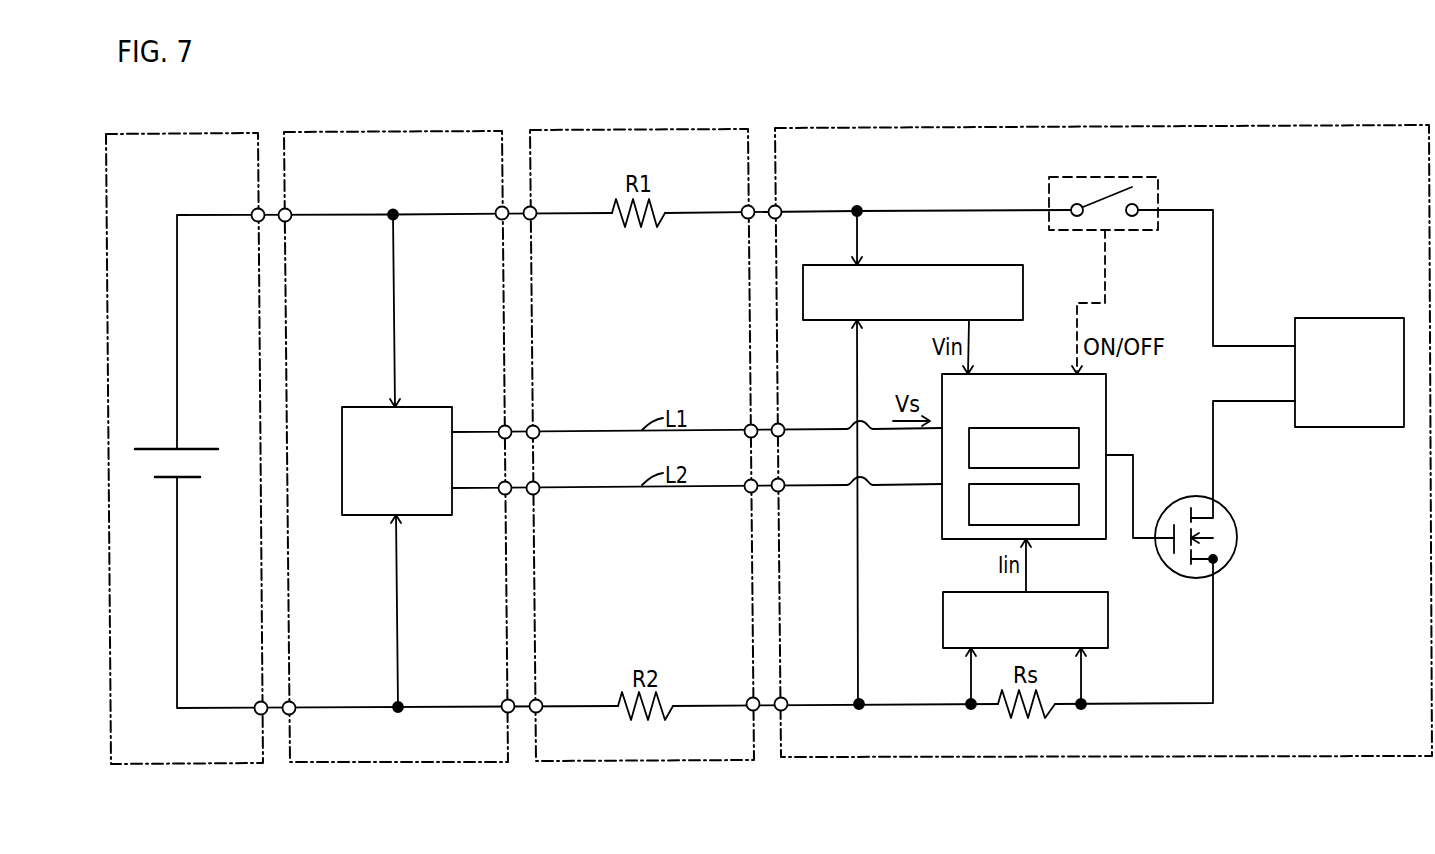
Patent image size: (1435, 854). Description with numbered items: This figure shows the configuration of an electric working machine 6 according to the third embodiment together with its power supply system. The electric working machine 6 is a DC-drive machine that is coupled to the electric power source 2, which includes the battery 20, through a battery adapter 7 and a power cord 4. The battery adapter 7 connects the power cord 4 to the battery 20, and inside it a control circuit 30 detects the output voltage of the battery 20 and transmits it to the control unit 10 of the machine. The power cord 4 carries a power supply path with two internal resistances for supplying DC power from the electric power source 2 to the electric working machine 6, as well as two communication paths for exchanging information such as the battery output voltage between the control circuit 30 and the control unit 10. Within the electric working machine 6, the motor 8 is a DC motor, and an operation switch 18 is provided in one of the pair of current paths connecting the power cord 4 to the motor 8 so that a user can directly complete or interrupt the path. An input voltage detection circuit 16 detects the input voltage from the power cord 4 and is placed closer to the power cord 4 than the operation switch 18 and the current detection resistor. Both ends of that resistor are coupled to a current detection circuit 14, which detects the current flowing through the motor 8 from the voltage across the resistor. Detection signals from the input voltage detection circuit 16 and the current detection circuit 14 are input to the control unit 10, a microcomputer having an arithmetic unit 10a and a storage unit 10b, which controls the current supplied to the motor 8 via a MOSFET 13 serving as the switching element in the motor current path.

The electric power source 2 is at (246, 132).
The battery adapter 7 is at (395, 131).
The power cord 4 is at (640, 129).
The electric working machine 6 is at (1090, 127).
The motor 8 is at (1346, 318).
The control unit 10 is at (1022, 456).
The arithmetic unit 10a is at (969, 503).
The storage unit 10b is at (969, 448).
The MOSFET 13 is at (1240, 537).
The current detection circuit 14 is at (1082, 592).
The input voltage detection circuit 16 is at (912, 265).
The operation switch 18 is at (1140, 177).
The battery 20 is at (196, 441).
The control circuit 30 is at (428, 407).